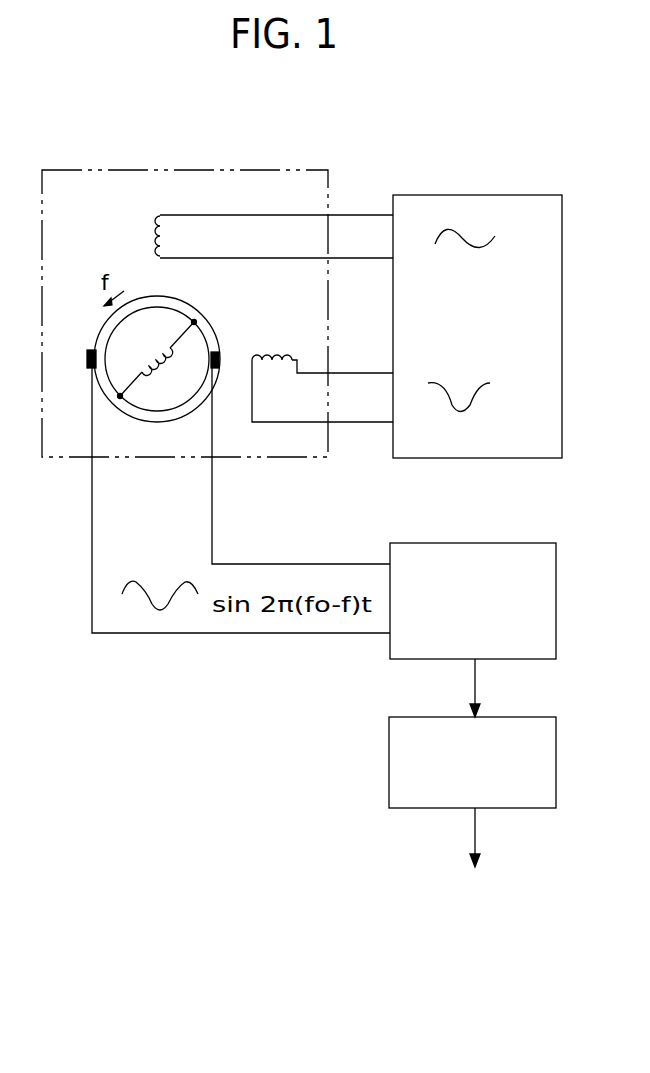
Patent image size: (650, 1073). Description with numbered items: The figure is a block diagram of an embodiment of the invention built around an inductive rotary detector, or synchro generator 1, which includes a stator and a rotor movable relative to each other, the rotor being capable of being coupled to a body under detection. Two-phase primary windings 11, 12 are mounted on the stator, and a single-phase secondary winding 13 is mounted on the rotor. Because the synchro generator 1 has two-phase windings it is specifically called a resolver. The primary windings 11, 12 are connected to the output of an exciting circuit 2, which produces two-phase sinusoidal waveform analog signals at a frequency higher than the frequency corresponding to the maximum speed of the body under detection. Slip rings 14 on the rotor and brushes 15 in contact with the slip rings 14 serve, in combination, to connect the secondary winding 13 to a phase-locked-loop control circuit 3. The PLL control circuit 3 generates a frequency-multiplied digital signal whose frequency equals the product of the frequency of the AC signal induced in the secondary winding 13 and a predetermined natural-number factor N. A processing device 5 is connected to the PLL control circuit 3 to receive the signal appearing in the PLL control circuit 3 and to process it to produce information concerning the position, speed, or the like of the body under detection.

The synchro generator 1 is at (245, 170).
The exciting circuit 2 is at (487, 195).
The phase-locked-loop (PLL) control circuit 3 is at (518, 543).
The processing device 5 is at (518, 717).
The primary winding 11 is at (168, 213).
The primary winding 12 is at (273, 357).
The secondary winding 13 is at (157, 364).
The slip rings 14 is at (176, 308).
The brushes 15 is at (88, 351).